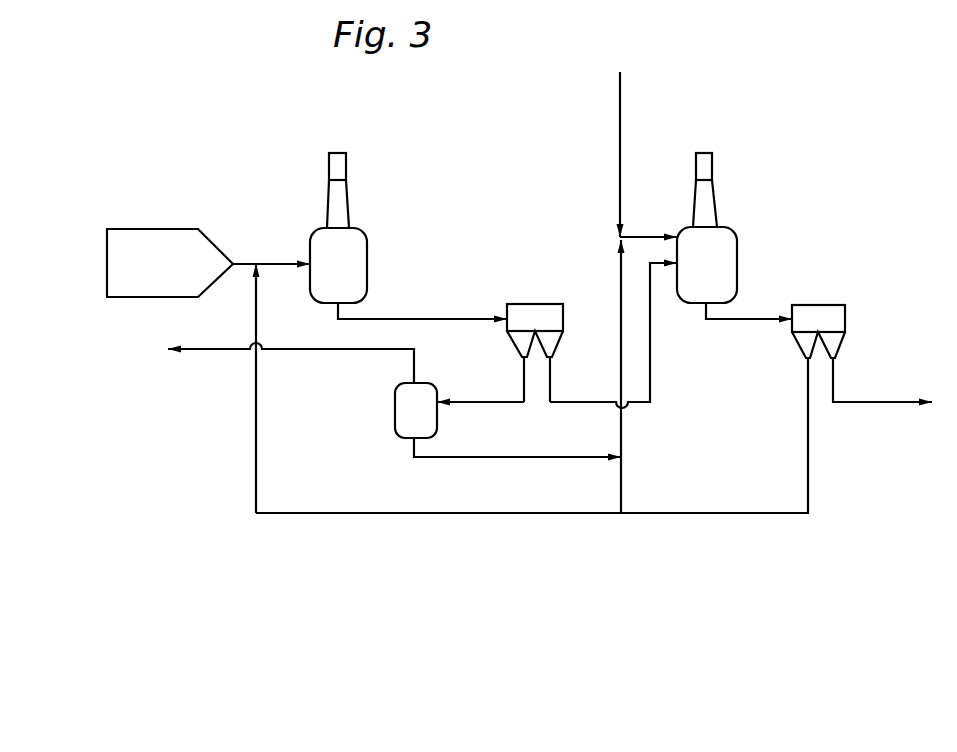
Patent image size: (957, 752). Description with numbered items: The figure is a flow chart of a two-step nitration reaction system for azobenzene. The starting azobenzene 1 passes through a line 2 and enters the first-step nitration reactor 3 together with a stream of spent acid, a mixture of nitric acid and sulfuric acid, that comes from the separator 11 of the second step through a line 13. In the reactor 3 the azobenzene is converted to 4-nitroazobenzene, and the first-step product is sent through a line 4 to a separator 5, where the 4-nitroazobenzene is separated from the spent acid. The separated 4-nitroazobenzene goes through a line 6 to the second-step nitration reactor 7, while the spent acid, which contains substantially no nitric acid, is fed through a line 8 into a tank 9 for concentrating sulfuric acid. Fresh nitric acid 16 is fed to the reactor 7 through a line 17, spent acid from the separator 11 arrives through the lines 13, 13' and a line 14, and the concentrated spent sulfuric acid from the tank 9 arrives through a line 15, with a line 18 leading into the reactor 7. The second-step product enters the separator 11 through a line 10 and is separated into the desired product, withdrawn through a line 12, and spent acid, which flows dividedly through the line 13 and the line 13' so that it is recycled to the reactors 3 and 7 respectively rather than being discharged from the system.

The starting azobenzene 1 is at (166, 280).
The line 2 is at (274, 264).
The first-step nitration reactor 3 is at (347, 282).
The line 4 is at (430, 319).
The separator 5 is at (535, 352).
The line 6 is at (651, 364).
The second-step nitration reactor 7 is at (714, 280).
The bottoms line to vessel 9 8 is at (505, 402).
The tank for concentrating sulfuric acid 9 is at (424, 424).
The line 10 is at (763, 322).
The separator 11 is at (832, 332).
The line 12 is at (870, 402).
The line 13 is at (532, 388).
The line 13' is at (649, 484).
The recycle gas line 14 is at (620, 302).
The line 15 is at (503, 447).
The fresh nitric acid 16 is at (623, 138).
The line 17 is at (629, 160).
The gas feed line to second reactor 18 is at (652, 237).